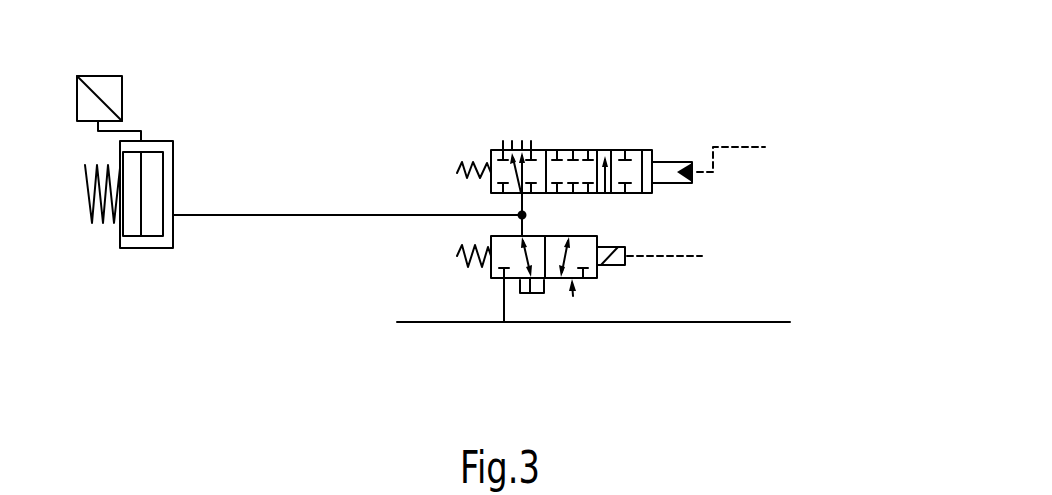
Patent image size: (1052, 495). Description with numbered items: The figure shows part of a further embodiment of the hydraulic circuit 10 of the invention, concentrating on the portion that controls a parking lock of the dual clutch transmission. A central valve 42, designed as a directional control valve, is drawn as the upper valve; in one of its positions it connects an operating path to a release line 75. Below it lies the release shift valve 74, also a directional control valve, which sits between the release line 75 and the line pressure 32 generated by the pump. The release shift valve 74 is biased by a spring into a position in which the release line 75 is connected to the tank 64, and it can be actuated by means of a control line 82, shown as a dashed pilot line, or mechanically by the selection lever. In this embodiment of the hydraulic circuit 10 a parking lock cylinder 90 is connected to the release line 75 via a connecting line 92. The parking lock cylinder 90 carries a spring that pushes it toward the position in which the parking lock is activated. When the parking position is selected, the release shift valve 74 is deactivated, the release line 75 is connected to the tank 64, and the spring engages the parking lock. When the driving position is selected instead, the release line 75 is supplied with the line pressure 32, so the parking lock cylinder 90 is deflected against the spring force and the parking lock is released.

The hydraulic circuit 10 is at (776, 132).
The line pressure 32 is at (457, 322).
The central valve 42 is at (604, 147).
The tank 64 is at (531, 293).
The release shift valve 74 is at (573, 296).
The release line 75 is at (513, 226).
The control line 82 is at (690, 256).
The parking lock cylinder 90 is at (173, 168).
The connecting line 92 is at (275, 215).